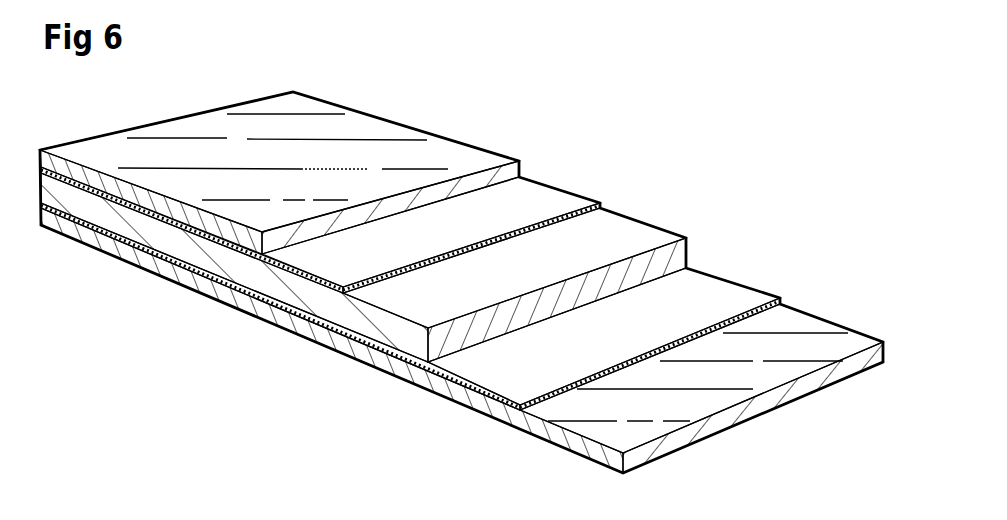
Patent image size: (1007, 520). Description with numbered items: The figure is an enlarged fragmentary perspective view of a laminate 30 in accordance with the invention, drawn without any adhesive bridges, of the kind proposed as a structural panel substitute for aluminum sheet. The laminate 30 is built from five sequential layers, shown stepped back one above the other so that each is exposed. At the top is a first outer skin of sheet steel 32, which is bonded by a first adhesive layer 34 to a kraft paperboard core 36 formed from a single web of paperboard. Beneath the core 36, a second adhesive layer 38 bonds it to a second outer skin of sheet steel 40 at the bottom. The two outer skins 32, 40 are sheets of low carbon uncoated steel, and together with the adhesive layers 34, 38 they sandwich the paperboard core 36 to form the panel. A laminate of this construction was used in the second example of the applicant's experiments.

The laminate 30 is at (266, 81).
The first outer skin of sheet steel 32 is at (370, 128).
The first adhesive layer 34 is at (537, 190).
The kraft paperboard core 36 is at (629, 230).
The second adhesive layer 38 is at (710, 288).
The second outer skin of sheet steel 40 is at (802, 325).